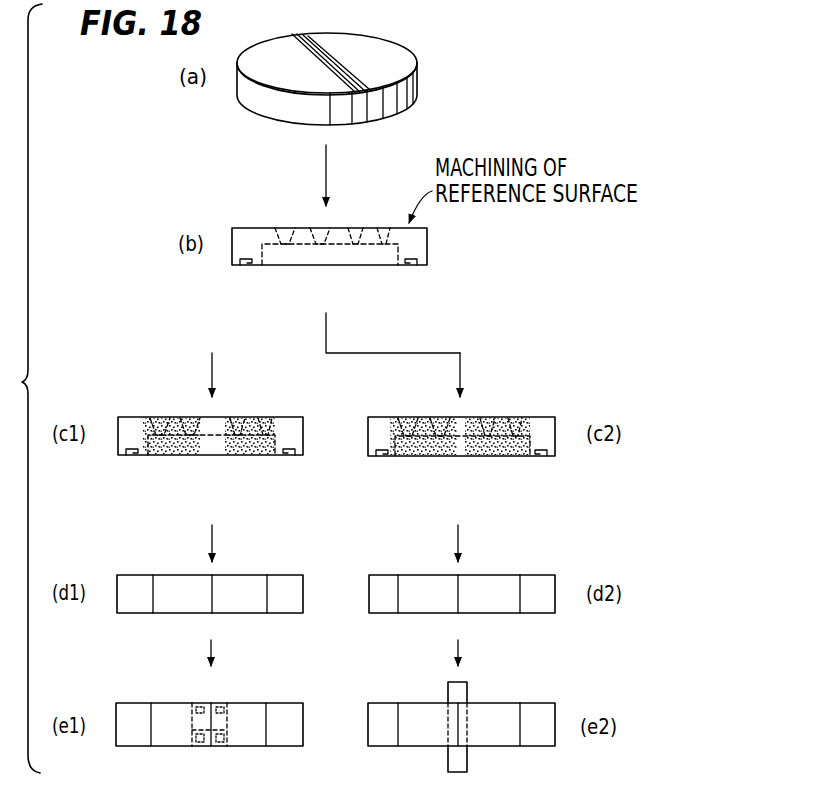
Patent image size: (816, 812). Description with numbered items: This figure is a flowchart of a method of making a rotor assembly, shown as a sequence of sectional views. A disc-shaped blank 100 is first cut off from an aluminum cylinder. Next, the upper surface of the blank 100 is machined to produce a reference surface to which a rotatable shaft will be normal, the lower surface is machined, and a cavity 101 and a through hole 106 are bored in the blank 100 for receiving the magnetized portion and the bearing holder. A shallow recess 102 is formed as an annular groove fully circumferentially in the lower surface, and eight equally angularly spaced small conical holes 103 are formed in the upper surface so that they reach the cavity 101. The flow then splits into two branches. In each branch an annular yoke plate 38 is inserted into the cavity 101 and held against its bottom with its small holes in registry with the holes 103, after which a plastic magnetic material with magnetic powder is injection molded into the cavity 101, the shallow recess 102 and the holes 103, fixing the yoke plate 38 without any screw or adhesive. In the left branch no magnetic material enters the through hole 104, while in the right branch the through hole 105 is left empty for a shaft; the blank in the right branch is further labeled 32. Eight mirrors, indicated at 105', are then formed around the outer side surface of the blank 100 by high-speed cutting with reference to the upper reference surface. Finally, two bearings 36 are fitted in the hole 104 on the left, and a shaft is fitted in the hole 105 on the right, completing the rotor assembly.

The disc-shaped blank 100 is at (400, 54).
The cavity 101 is at (353, 265).
The shallow recess 102 is at (412, 265).
The small conical holes 103 is at (288, 227).
The through hole 106 is at (333, 227).
The through hole 104 is at (212, 423).
The annular yoke plate 38 is at (150, 437).
The through hole 105 is at (461, 418).
The plate 32 is at (527, 437).
The filled groove 105' is at (336, 576).
The bearings 36 is at (218, 710).